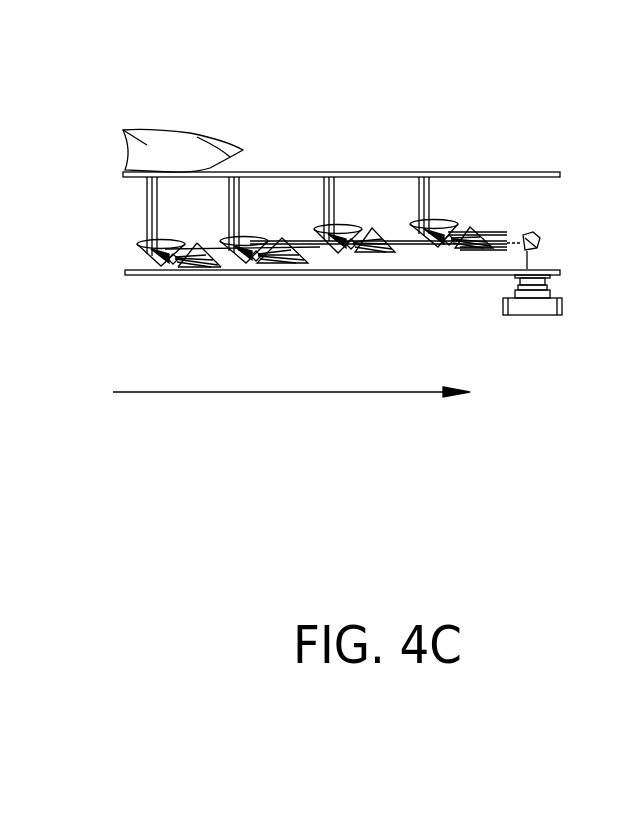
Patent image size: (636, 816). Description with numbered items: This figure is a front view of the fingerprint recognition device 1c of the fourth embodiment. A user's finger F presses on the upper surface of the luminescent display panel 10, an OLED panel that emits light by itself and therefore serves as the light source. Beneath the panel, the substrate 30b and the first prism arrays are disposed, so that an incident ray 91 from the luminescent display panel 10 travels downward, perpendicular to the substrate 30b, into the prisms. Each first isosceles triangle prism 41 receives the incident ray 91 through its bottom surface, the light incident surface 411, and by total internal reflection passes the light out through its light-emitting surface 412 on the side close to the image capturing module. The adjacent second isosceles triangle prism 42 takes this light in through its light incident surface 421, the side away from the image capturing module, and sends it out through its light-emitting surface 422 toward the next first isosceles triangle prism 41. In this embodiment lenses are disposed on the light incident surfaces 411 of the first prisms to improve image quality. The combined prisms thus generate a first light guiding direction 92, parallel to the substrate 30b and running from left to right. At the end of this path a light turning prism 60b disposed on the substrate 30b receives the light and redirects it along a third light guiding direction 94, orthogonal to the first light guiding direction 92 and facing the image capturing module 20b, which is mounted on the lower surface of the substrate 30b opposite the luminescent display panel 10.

The fingerprint recognition device 1c is at (122, 78).
The finger F is at (147, 145).
The luminescent display panel 10 is at (525, 172).
The incident ray 91 is at (147, 206).
The first isosceles triangle prism 41 is at (163, 270).
The light incident surface 411 is at (355, 254).
The light-emitting surface 412 is at (165, 293).
The second isosceles triangle prism 42 is at (242, 298).
The light incident surface 421 is at (204, 297).
The light-emitting surface 422 is at (253, 283).
The substrate 30b is at (127, 272).
The light turning prism 60b is at (542, 237).
The third light guiding direction 94 is at (529, 254).
The image capturing module 20b is at (533, 310).
The first light guiding direction 92 is at (373, 392).